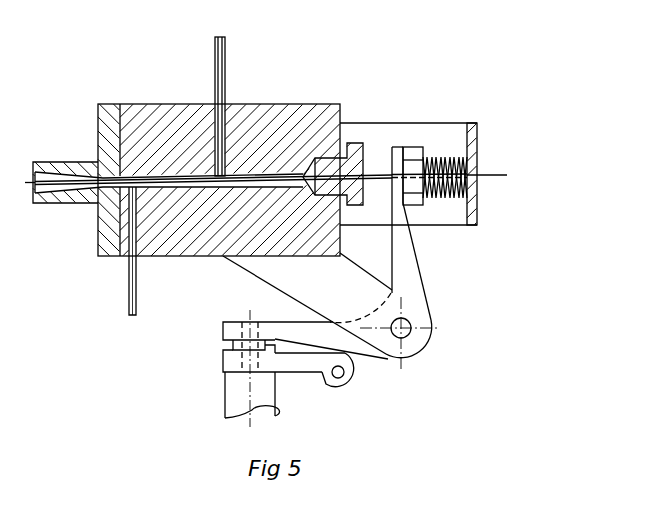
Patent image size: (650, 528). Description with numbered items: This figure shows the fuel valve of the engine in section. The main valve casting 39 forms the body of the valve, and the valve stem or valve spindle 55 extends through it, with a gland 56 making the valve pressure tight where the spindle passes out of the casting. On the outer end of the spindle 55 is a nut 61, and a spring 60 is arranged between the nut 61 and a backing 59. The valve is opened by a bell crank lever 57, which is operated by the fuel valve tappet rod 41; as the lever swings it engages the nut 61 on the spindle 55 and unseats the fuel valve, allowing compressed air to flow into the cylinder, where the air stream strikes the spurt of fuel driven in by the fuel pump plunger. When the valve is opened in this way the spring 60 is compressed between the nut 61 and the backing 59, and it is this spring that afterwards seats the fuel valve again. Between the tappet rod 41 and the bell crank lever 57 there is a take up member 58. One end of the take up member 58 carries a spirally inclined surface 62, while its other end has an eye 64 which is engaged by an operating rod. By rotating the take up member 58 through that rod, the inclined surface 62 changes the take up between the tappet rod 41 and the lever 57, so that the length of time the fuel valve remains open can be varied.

The main valve casting 39 is at (226, 67).
The fuel valve tappet rod 41 is at (137, 297).
The valve stem 55 is at (362, 181).
The gland 56 is at (363, 146).
The bell crank lever 57 is at (330, 258).
The take up member 58 is at (285, 369).
The backing 59 is at (477, 129).
The spring 60 is at (428, 190).
The nut 61 is at (423, 148).
The spirally inclined surface 62 is at (226, 362).
The eye 64 is at (344, 375).